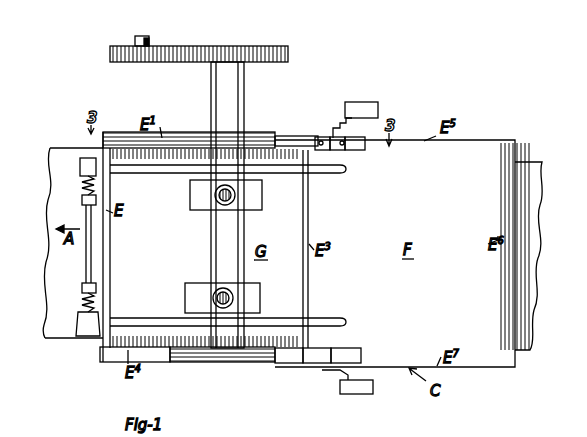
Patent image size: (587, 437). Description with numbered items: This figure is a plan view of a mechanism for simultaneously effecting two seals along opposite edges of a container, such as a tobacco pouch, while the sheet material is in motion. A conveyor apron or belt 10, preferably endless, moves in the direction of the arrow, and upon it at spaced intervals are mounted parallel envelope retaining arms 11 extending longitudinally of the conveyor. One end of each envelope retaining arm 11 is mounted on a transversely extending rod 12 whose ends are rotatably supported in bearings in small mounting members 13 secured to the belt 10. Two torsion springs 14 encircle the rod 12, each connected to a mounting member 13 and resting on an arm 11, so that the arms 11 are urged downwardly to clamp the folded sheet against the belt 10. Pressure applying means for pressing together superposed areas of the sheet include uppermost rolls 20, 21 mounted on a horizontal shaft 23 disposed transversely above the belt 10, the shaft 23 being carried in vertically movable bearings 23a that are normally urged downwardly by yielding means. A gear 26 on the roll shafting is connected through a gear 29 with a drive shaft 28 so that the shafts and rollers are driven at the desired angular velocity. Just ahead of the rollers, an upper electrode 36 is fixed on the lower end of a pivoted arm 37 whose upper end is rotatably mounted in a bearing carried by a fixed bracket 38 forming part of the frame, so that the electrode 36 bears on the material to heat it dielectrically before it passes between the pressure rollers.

The conveyor apron or belt 10 is at (58, 176).
The envelope retaining arm 11 is at (160, 168).
The transversely extending rod 12 is at (86, 262).
The mounting member 13 is at (80, 162).
The torsion spring 14 is at (82, 186).
The roll 20 is at (250, 138).
The roll 21 is at (205, 355).
The horizontal shaft 23 is at (214, 134).
The bearing 23a is at (206, 210).
The gear 26 is at (250, 52).
The drive shaft 28 is at (150, 40).
The gear 29 is at (118, 47).
The upper electrode 36 is at (305, 146).
The pivoted arm 37 is at (333, 128).
The fixed bracket 38 is at (352, 104).